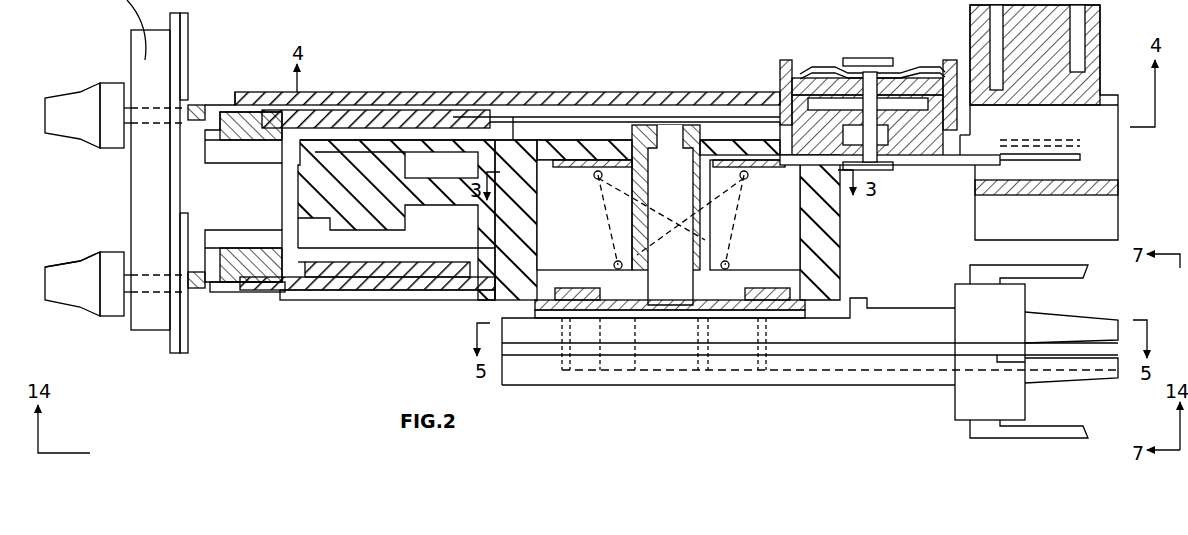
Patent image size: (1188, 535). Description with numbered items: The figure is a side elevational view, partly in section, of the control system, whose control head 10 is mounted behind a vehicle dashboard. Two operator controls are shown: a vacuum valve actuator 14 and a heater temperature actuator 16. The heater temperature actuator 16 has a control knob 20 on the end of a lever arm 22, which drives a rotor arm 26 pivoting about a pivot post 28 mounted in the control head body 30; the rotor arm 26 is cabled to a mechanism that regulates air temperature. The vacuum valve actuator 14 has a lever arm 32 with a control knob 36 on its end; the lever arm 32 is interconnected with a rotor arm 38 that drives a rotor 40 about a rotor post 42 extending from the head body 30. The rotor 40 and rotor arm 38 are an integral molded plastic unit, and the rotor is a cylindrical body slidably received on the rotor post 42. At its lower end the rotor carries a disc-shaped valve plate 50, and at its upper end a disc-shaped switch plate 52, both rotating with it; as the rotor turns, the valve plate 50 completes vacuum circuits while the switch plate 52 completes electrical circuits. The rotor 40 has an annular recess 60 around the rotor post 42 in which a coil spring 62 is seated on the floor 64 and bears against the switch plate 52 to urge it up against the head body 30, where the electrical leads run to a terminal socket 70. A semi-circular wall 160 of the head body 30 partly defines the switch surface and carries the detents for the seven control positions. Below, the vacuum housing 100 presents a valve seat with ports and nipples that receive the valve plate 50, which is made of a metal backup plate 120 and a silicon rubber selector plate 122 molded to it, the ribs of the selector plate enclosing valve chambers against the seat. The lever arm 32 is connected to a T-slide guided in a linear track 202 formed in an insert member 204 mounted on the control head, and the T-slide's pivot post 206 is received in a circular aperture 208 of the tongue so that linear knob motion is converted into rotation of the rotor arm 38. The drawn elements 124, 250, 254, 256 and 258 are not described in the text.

The control head 10 is at (625, 68).
The vacuum valve actuator 14 is at (85, 240).
The heater temperature actuator 16 is at (98, 63).
The control knob 20 is at (75, 112).
The lever arm 22 is at (200, 106).
The rotor arm 26 is at (418, 92).
The pivot post 28 is at (870, 143).
The control head body 30 is at (905, 133).
The lever arm 32 is at (200, 270).
The control knob 36 is at (93, 262).
The rotor arm 38 is at (393, 297).
The rotor 40 is at (496, 296).
The rotor post 42 is at (640, 252).
The valve plate 50 is at (808, 287).
The switch plate 52 is at (770, 173).
The annular recess 60 is at (590, 217).
The coil spring 62 is at (744, 188).
The floor 64 is at (592, 270).
The terminal socket 70 is at (1095, 150).
The vacuum housing 100 is at (800, 387).
The backup plate 120 is at (625, 306).
The selector plate 122 is at (585, 320).
The retaining plate 124 is at (538, 320).
The semi-circular wall 160 is at (478, 157).
The linear track 202 is at (243, 250).
The insert member 204 is at (290, 182).
The pivot post 206 is at (250, 290).
The circular aperture 208 is at (262, 290).
The left seal ring 250 is at (565, 290).
The plate support 254 is at (755, 320).
The piston seal 256 is at (625, 287).
The right seal ring 258 is at (760, 293).